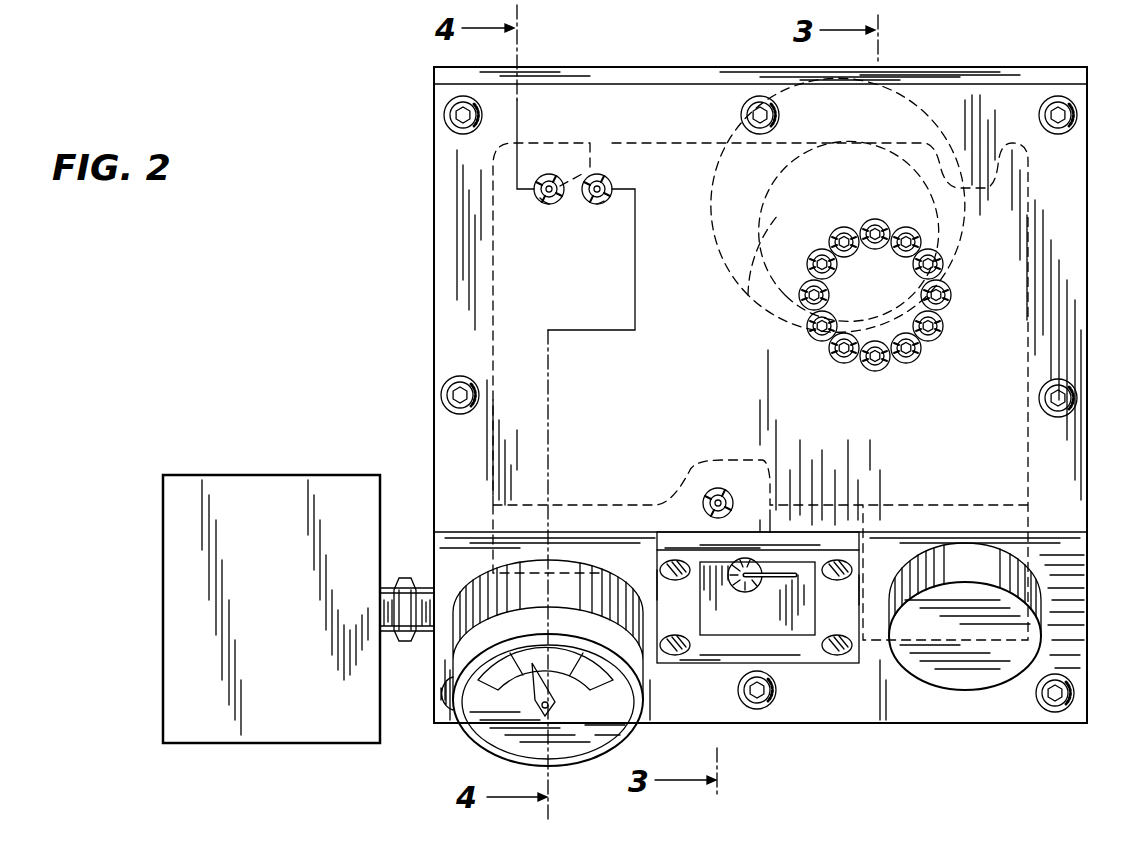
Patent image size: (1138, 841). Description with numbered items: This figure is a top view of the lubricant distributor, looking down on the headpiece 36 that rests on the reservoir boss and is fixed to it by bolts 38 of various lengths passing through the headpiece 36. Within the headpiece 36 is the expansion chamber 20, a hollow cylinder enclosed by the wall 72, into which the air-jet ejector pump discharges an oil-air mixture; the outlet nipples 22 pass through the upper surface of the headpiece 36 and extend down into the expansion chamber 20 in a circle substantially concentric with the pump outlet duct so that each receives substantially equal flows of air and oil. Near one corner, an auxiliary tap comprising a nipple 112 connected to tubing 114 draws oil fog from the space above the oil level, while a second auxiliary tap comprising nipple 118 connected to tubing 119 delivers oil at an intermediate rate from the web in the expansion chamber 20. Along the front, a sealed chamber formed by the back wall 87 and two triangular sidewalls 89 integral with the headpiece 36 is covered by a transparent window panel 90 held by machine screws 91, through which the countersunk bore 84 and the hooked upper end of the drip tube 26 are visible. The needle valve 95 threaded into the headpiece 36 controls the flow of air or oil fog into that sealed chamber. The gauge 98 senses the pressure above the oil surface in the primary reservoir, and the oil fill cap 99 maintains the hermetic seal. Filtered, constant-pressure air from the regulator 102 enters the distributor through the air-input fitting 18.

The headpiece 36 is at (1080, 453).
The bolts 38 is at (444, 117).
The auxiliary outlet tube 114 is at (536, 181).
The nipple 112 is at (575, 170).
The nipple 118 is at (585, 200).
The auxiliary outlet tube 119 is at (604, 204).
The outlet nipples 22 is at (810, 322).
The wall 72 is at (982, 362).
The expansion chamber 20 is at (893, 310).
The needle valve 95 is at (708, 492).
The window panel 90 is at (773, 622).
The drip tube 26 is at (797, 576).
The countersunk bore 84 is at (742, 590).
The machine screws 91 is at (672, 558).
The triangular sidewalls 89 is at (654, 590).
The back wall 87 is at (773, 530).
The gauge 98 is at (487, 730).
The oil fill cap 99 is at (963, 672).
The air-input fitting 18 is at (404, 578).
The regulator 102 is at (340, 453).